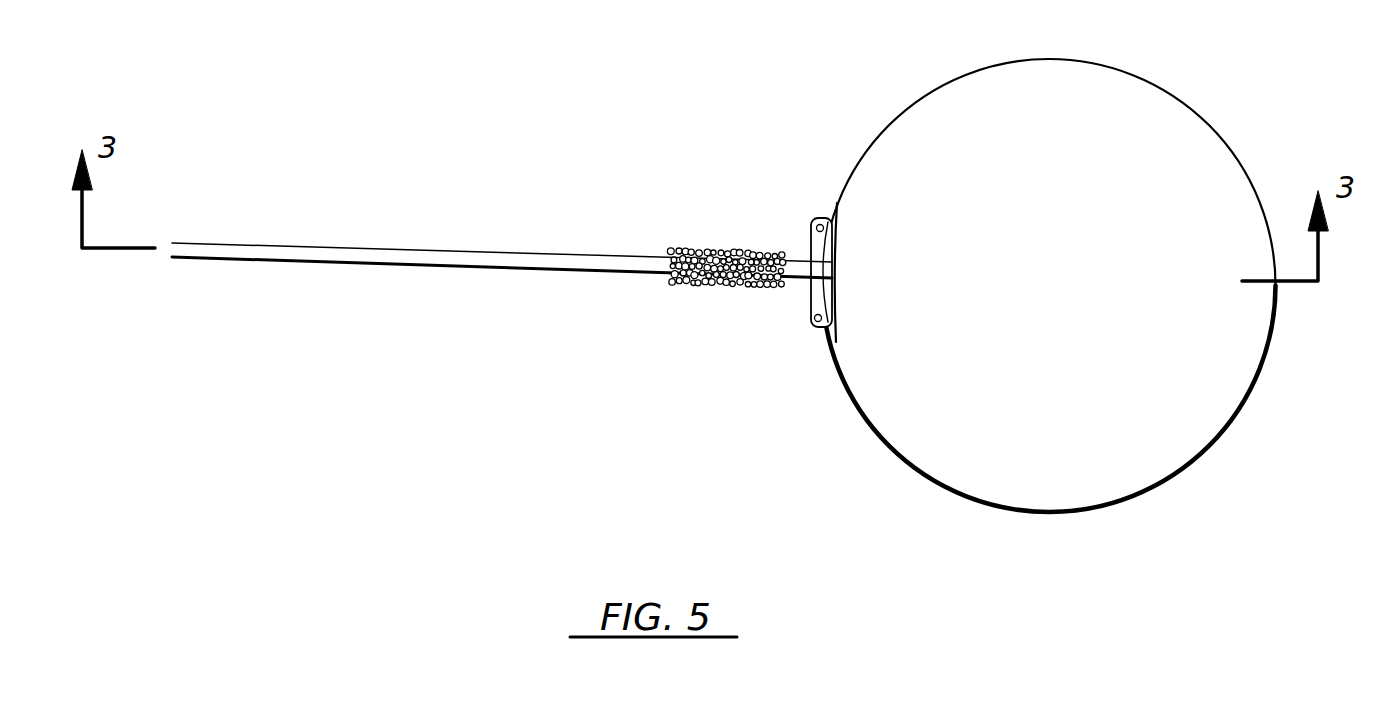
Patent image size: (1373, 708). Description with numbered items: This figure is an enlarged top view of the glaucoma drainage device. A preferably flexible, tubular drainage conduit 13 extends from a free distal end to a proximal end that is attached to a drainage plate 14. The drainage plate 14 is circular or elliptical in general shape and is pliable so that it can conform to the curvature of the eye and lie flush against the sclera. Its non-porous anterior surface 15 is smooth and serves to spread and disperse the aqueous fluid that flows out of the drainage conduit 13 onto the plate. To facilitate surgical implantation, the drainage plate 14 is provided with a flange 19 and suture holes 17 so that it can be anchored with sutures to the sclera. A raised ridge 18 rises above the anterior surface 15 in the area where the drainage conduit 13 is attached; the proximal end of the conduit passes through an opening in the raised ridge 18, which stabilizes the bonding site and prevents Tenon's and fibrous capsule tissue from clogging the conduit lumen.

The drainage conduit 13 is at (338, 266).
The drainage plate 14 is at (1123, 69).
The anterior surface 15 is at (948, 345).
The suture holes 17 is at (822, 221).
The raised ridge 18 is at (834, 216).
The flange 19 is at (807, 290).